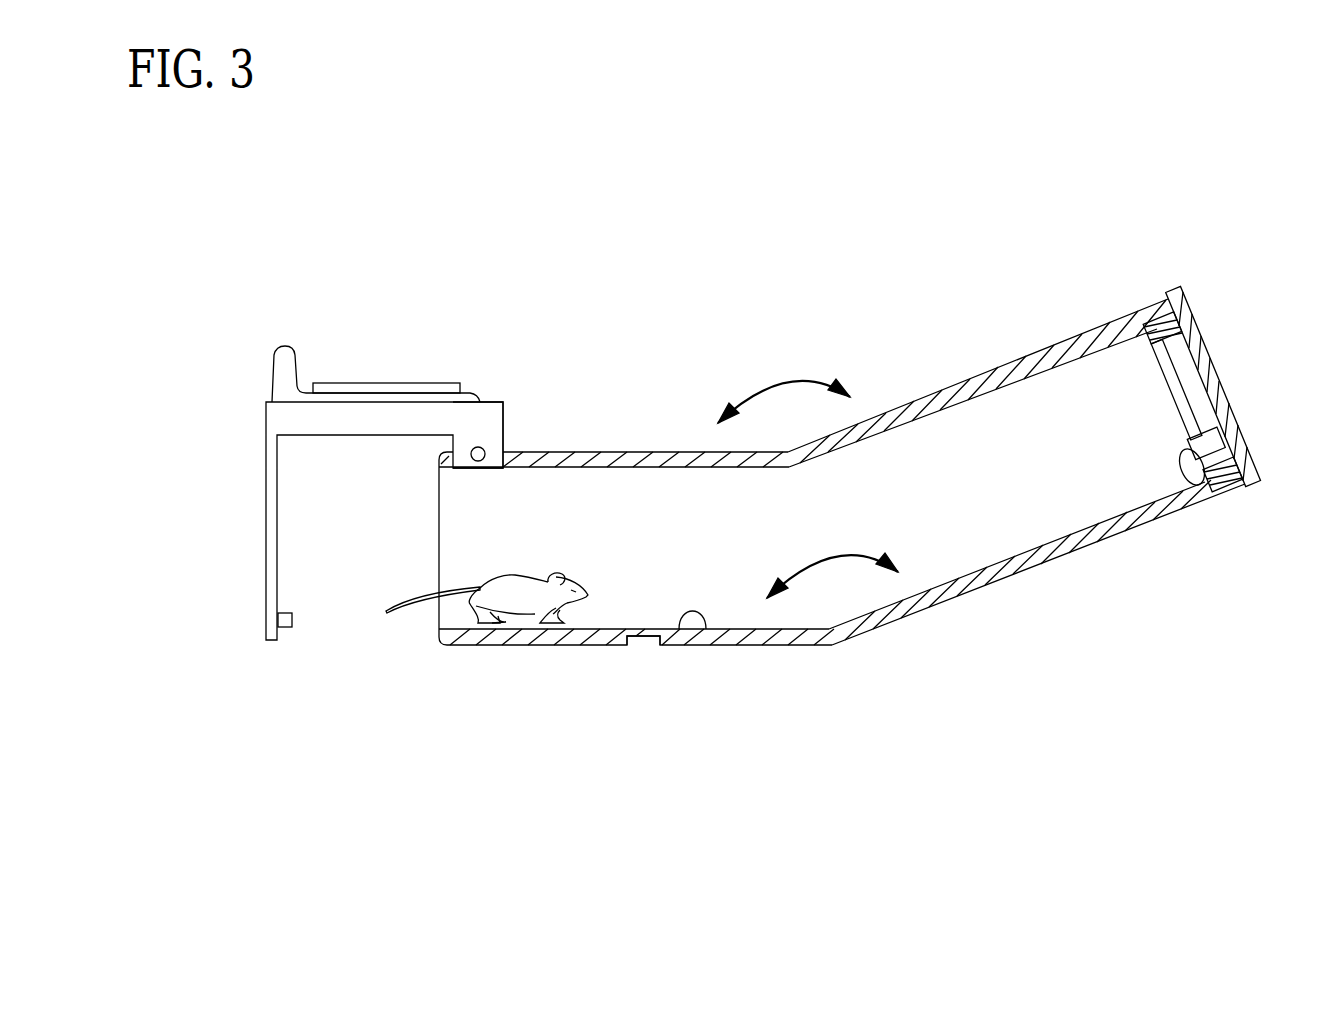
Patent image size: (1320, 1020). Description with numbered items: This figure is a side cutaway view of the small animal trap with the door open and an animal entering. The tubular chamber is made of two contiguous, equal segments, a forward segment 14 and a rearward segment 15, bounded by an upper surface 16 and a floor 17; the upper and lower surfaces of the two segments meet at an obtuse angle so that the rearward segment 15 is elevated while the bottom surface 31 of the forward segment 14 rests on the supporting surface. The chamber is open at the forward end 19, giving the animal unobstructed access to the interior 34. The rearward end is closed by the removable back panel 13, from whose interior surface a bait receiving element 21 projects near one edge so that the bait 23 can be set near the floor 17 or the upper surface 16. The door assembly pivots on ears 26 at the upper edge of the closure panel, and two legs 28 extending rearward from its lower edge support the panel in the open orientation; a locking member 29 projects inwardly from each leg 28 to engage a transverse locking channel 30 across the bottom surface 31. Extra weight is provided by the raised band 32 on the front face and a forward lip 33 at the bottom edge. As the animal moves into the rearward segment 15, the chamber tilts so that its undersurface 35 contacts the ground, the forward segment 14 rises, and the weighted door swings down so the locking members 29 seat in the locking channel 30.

The removable back panel 13 is at (1207, 342).
The forward segment 14 is at (560, 508).
The rearward segment 15 is at (1073, 501).
The upper surface 16 is at (1025, 364).
The floor 17 is at (707, 615).
The forward end 19 is at (438, 615).
The bait receiving element 21 is at (1218, 440).
The bait 23 is at (1215, 482).
The ears 26 is at (485, 425).
The legs 28 is at (273, 563).
The locking member 29 is at (290, 624).
The locking channel 30 is at (647, 640).
The bottom surface 31 is at (792, 648).
The band 32 is at (372, 390).
The lip 33 is at (287, 355).
The interior 34 is at (638, 535).
The undersurface 35 is at (987, 583).